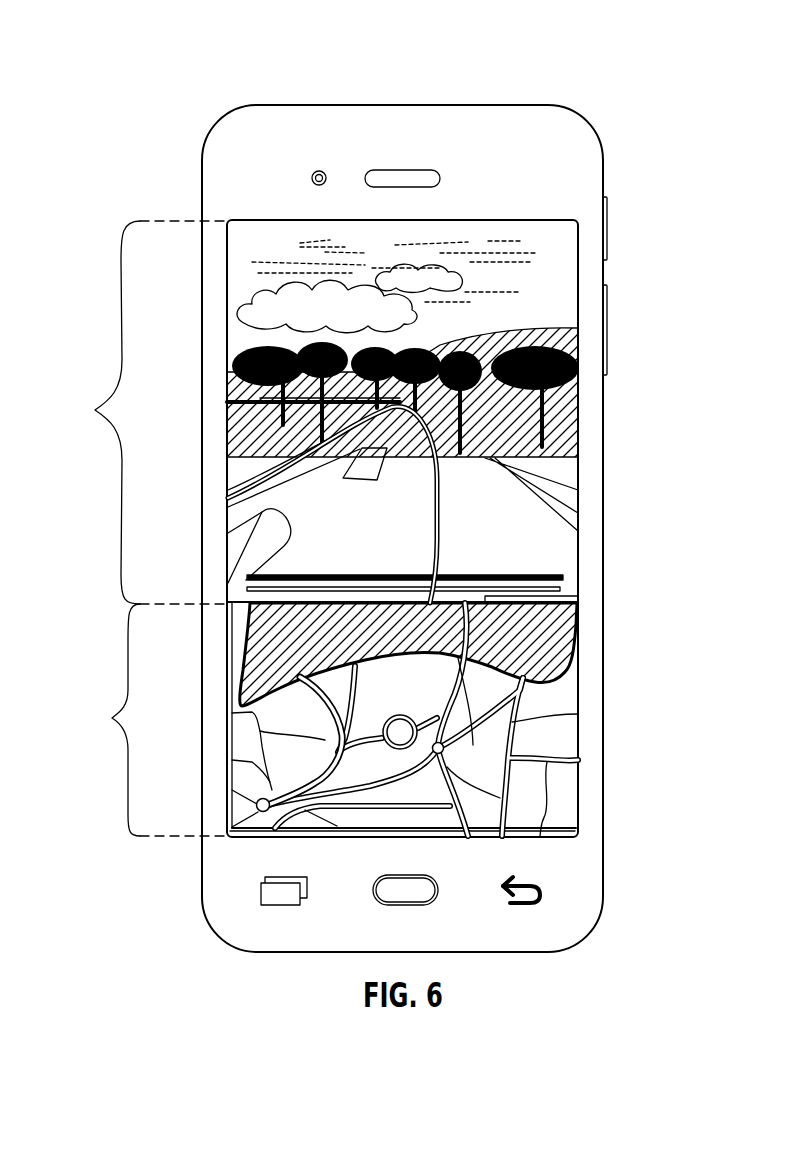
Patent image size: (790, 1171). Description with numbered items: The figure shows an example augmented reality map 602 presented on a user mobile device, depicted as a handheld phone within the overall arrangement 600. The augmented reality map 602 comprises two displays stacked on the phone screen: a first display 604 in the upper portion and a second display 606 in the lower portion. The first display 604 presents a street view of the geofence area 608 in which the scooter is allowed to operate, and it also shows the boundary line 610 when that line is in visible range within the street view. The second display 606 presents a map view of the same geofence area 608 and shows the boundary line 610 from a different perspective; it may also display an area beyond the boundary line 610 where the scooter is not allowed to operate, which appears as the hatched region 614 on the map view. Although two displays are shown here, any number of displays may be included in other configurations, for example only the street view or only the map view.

The user interface display of mobile device 600 is at (183, 34).
The augmented reality map 602 is at (228, 109).
The first display 604 is at (95, 410).
The second display 606 is at (112, 718).
The geofence area 608 is at (479, 519).
The boundary line 610 is at (561, 394).
The hatched overlay region on map 614 is at (561, 624).